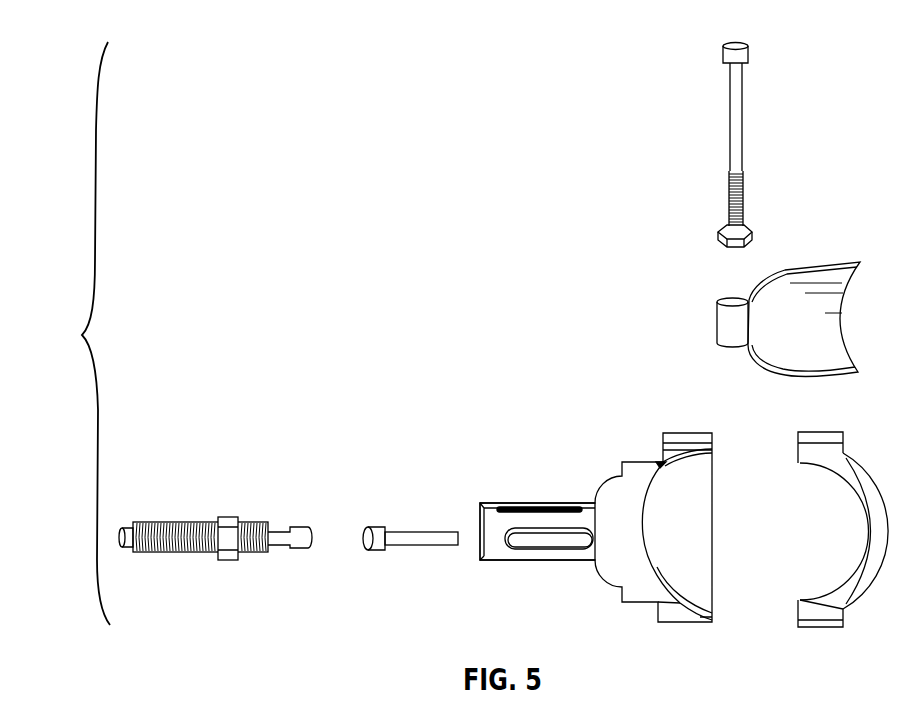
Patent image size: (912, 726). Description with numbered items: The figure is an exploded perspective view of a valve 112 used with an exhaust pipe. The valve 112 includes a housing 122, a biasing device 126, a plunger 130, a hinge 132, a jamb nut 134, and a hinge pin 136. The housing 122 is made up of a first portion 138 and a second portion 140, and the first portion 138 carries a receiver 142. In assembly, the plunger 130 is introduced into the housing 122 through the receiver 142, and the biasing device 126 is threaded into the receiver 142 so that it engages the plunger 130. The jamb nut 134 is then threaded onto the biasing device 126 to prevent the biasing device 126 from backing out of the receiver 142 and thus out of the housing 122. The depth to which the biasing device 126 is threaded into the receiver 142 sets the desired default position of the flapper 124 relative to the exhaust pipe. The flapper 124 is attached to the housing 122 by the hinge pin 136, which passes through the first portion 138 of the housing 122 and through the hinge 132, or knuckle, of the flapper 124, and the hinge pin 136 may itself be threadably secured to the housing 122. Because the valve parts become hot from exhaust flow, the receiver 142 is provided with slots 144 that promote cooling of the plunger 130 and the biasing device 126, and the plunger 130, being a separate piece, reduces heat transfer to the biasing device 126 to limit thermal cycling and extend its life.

The valve 112 is at (265, 192).
The housing 122 is at (623, 418).
The flapper 124 is at (820, 262).
The biasing device 126 is at (183, 521).
The plunger 130 is at (410, 527).
The hinge 132 is at (729, 318).
The jamb nut 134 is at (226, 516).
The hinge pin 136 is at (745, 122).
The first portion 138 is at (652, 487).
The second portion 140 is at (853, 478).
The receiver 142 is at (515, 555).
The slots 144 is at (523, 507).